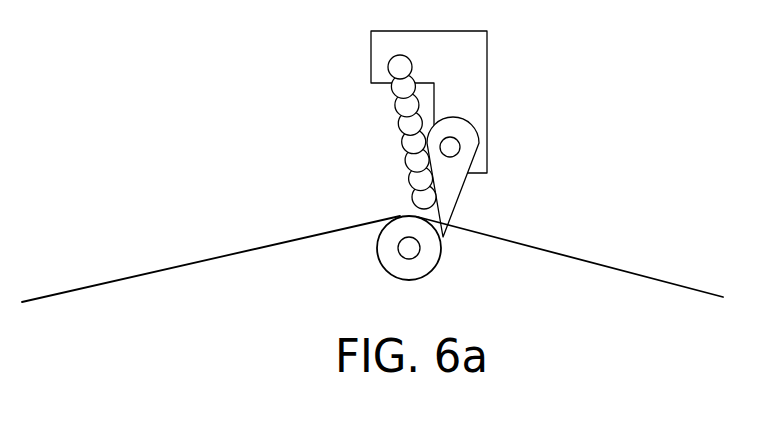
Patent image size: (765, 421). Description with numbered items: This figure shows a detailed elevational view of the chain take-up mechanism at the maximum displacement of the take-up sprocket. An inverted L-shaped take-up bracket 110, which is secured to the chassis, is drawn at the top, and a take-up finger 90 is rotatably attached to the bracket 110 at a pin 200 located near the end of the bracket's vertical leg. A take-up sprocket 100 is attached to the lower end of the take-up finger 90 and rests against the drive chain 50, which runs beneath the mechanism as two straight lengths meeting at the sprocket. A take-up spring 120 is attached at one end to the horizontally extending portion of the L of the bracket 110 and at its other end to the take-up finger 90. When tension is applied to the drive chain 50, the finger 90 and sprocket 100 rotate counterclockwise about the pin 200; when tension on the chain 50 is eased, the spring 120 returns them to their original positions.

The drive chain 50 is at (121, 294).
The take-up finger 90 is at (461, 197).
The take-up sprocket 100 is at (378, 266).
The take-up bracket 110 is at (355, 59).
The take-up spring 120 is at (398, 148).
The pin 200 is at (455, 146).